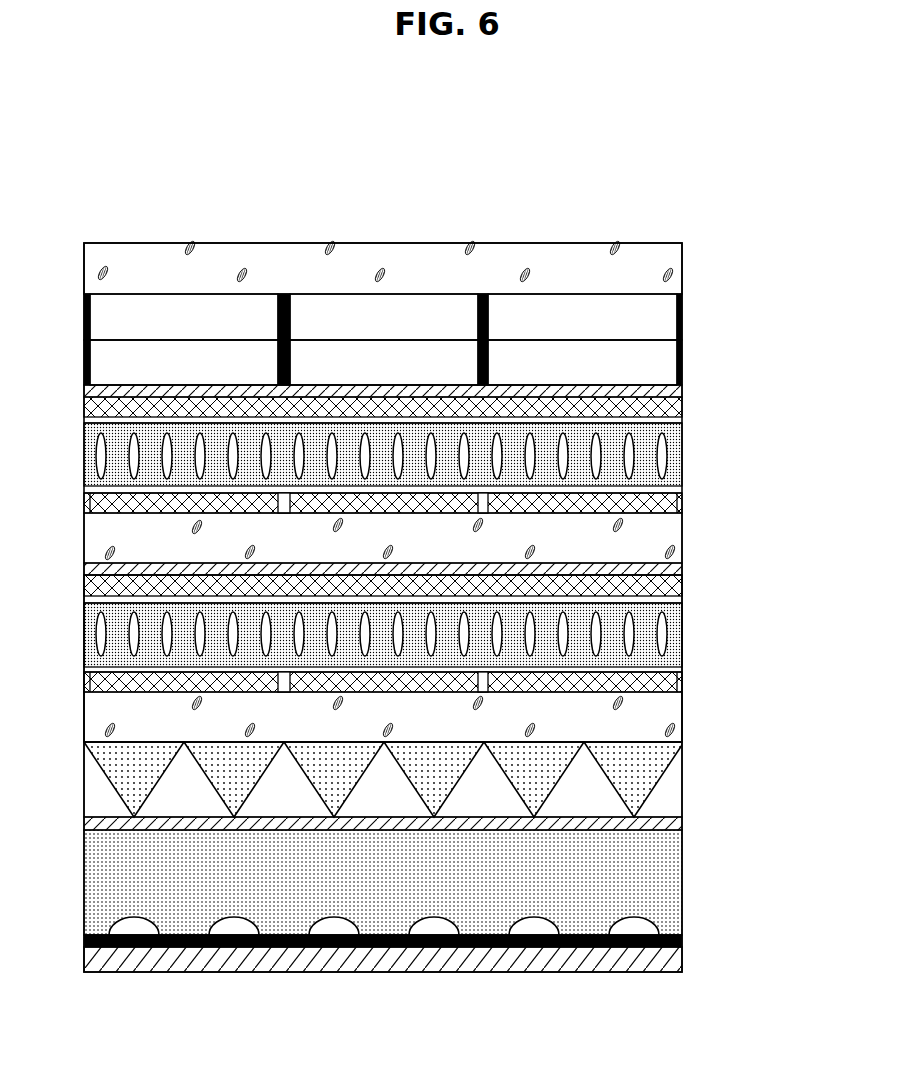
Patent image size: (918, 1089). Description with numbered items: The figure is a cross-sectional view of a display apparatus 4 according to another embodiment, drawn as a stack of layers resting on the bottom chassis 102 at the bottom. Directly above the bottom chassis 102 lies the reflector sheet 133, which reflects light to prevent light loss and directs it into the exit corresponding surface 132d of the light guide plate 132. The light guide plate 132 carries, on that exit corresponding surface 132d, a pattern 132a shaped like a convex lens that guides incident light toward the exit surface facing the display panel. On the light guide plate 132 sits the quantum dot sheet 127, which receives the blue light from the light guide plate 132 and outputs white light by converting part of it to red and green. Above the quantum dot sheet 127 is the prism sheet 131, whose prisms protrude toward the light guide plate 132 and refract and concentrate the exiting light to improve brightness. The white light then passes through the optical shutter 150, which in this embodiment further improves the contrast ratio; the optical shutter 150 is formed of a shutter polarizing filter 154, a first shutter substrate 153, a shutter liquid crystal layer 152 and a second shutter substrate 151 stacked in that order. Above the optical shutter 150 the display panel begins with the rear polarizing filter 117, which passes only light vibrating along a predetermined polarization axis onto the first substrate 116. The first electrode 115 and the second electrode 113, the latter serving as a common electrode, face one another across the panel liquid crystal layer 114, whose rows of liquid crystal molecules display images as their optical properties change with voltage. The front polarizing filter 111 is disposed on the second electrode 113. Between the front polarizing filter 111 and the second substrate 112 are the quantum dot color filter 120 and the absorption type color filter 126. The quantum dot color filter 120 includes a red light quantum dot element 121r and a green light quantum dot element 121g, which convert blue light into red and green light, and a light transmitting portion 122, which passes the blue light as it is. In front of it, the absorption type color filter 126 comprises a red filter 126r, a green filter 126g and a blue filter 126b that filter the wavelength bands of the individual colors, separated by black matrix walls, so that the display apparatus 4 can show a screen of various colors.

The display apparatus 4 is at (401, 118).
The bottom chassis 102 is at (683, 958).
The front polarizing filter 111 is at (683, 389).
The second substrate 112 is at (683, 258).
The second electrode 113 is at (683, 407).
The panel liquid crystal layer 114 is at (676, 452).
The first electrode 115 is at (676, 502).
The first substrate 116 is at (676, 523).
The rear polarizing filter 117 is at (683, 572).
The quantum dot color filter 120 is at (684, 360).
The red light quantum dot element 121r is at (115, 360).
The green light quantum dot element 121g is at (328, 358).
The light transmitting portion 122 is at (532, 360).
The absorption type color filter 126 is at (684, 312).
The red filter 126r is at (217, 305).
The green filter 126g is at (430, 307).
The blue filter 126b is at (632, 307).
The quantum dot sheet 127 is at (683, 822).
The prism sheet 131 is at (426, 779).
The light guide plate 132 is at (431, 882).
The pattern 132a is at (655, 912).
The exit corresponding surface 132d is at (482, 947).
The reflector sheet 133 is at (683, 938).
The optical shutter 150 is at (777, 593).
The second shutter substrate 151 is at (683, 587).
The shutter liquid crystal layer 152 is at (683, 630).
The first shutter substrate 153 is at (683, 678).
The shutter polarizing filter 154 is at (676, 715).